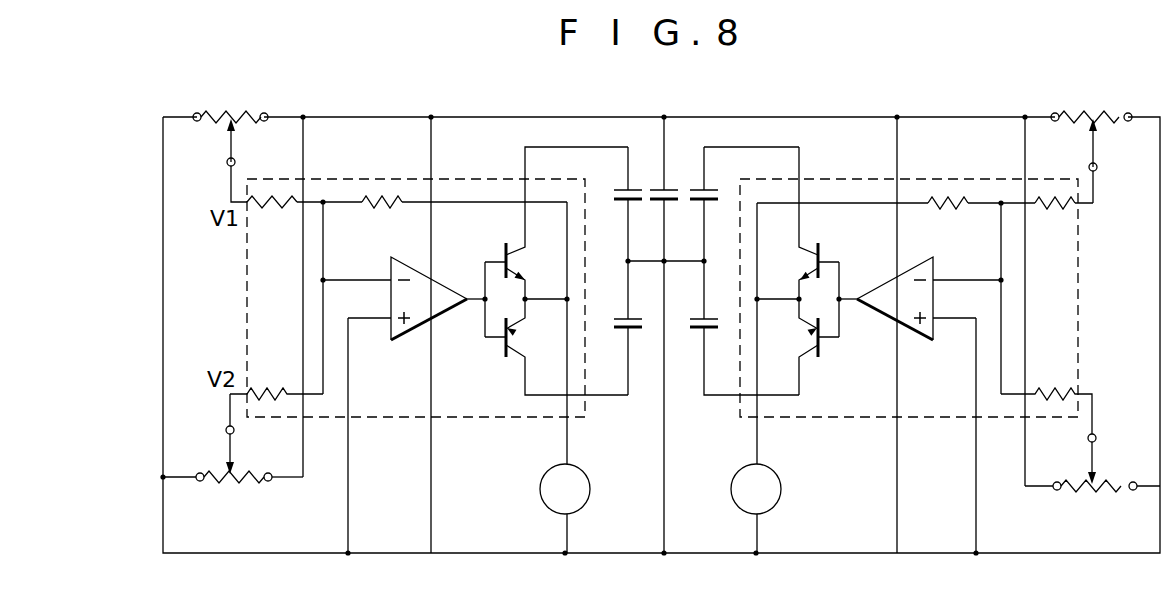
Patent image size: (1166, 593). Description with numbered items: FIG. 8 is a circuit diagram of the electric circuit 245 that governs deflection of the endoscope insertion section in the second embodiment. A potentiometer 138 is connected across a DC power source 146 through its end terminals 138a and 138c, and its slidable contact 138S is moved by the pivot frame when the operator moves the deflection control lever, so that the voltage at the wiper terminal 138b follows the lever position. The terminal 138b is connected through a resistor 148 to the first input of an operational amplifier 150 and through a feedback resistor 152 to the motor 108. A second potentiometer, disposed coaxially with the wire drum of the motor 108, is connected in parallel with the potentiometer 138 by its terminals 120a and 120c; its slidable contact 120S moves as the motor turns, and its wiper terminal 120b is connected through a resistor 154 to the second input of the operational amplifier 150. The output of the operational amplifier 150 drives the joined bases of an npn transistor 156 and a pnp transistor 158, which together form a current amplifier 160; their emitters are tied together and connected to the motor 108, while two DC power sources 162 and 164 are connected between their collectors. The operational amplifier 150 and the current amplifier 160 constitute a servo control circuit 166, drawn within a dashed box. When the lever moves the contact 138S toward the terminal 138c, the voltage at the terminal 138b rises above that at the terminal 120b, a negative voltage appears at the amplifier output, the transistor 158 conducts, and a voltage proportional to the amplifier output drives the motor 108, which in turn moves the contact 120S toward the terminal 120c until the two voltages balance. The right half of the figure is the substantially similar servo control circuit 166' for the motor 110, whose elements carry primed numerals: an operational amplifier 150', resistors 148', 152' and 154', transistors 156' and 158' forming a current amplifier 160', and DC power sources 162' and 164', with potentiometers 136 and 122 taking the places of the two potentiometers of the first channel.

The electric circuit 245 is at (857, 111).
The potentiometer 138 is at (230, 112).
The terminal 138a is at (186, 113).
The terminal 138b is at (227, 164).
The terminal 138c is at (269, 113).
The slidable contact 138S is at (237, 146).
The resistor 148 is at (272, 222).
The feedback resistor 152 is at (378, 224).
The resistor 154 is at (276, 371).
The operational amplifier 150 is at (438, 307).
The current amplifier 160 is at (482, 274).
The npn transistor 156 is at (567, 223).
The pnp transistor 158 is at (567, 347).
The servo control circuit 166 is at (416, 327).
The motor 108 is at (583, 503).
The motor 110 is at (774, 503).
The DC power source 162 is at (608, 204).
The DC power source 162' is at (744, 204).
The DC power source 164 is at (613, 328).
The DC power source 164' is at (744, 328).
The DC power source 146 is at (668, 186).
The terminal 120a is at (196, 482).
The terminal 120b is at (234, 430).
The terminal 120c is at (270, 482).
The slidable contact 120S is at (226, 440).
The servo control circuit 166' is at (909, 327).
The operational amplifier 150' is at (886, 308).
The current amplifier 160' is at (854, 277).
The npn transistor 156' is at (789, 223).
The pnp transistor 158' is at (789, 347).
The feedback resistor 152' is at (964, 224).
The resistor 148' is at (1059, 224).
The resistor 154' is at (1046, 388).
The potentiometer 136 is at (1084, 111).
The potentiometer 122 is at (1098, 492).